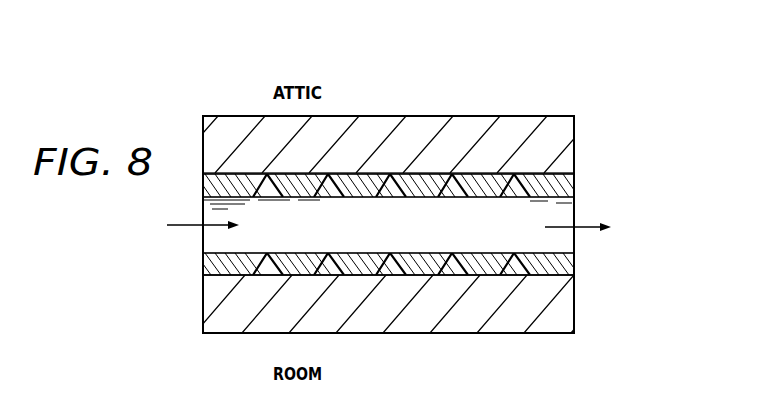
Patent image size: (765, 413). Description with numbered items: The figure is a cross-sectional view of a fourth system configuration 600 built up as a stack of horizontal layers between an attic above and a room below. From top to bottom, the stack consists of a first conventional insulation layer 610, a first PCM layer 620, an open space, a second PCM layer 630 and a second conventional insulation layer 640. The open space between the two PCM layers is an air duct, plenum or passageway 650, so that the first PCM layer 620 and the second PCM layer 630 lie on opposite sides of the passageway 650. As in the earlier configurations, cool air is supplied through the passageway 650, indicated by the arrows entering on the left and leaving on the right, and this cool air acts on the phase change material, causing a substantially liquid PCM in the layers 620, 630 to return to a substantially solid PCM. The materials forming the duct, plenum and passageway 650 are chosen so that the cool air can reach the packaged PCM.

The fourth system configuration 600 is at (599, 97).
The first conventional insulation layer 610 is at (577, 156).
The first PCM layer 620 is at (576, 190).
The second PCM layer 630 is at (565, 270).
The second conventional insulation layer 640 is at (565, 318).
The air duct, plenum or passageway 650 is at (258, 230).